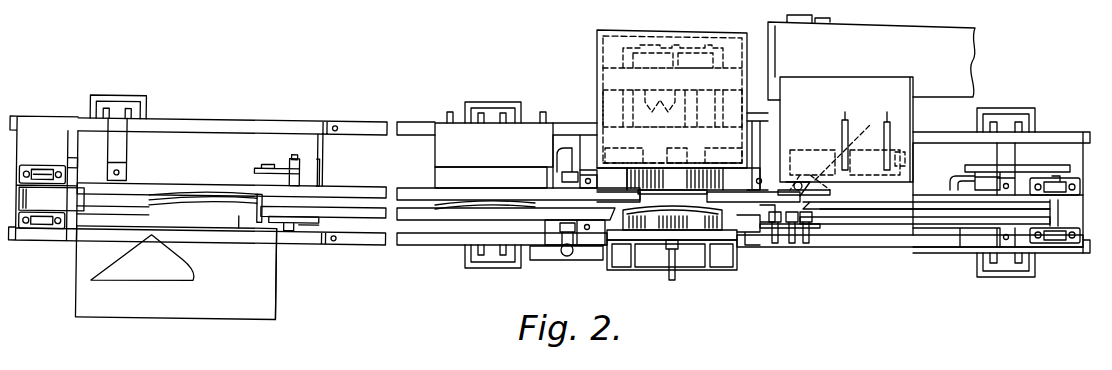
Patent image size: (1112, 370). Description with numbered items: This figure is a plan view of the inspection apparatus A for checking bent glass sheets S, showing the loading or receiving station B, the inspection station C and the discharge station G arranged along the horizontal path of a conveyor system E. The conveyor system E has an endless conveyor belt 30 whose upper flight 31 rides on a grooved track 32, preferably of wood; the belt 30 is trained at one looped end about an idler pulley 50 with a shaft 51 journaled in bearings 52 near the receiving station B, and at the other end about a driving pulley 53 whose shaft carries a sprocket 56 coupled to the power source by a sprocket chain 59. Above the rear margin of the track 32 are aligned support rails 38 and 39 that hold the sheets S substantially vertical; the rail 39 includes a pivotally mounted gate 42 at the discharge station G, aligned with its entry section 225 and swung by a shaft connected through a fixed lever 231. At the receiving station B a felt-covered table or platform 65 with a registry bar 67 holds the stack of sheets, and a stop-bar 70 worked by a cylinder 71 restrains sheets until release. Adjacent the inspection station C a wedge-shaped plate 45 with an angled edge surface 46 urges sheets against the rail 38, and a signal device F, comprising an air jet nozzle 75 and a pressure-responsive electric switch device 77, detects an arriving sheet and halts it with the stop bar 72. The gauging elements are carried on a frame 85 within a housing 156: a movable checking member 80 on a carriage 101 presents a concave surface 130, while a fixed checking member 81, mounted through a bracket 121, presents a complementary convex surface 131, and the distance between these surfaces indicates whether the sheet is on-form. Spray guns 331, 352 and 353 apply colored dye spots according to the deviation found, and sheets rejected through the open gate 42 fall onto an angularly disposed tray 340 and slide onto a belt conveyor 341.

The idler pulley 50 is at (33, 172).
The shaft 51 is at (41, 186).
The bearings 52 is at (70, 167).
The registry bar 67 is at (200, 215).
The felt-covered table or platform 65 is at (213, 294).
The stop-bar 70 is at (258, 196).
The cylinder 71 is at (282, 170).
The endless conveyor belt 30 is at (358, 196).
The grooved track 32 is at (357, 220).
The support rail 38 is at (377, 190).
The upper flight 31 is at (417, 205).
The angularly disposed edge surface 46 is at (547, 207).
The wedge-shaped plate 45 is at (537, 209).
The air jet nozzle 75 is at (574, 250).
The electric switch device 77 is at (560, 174).
The housing 156 is at (637, 42).
The carriage 101 is at (694, 46).
The frame 85 is at (733, 66).
The surface 130 is at (653, 189).
The movable checking member 80 is at (677, 190).
The surface 131 is at (652, 212).
The fixed checking member 81 is at (698, 216).
The bracket 121 is at (653, 267).
The stop member or bar 72 is at (719, 240).
The spray gun 352 is at (770, 255).
The spray gun 353 is at (797, 258).
The spray gun 331 is at (811, 240).
The gate 42 is at (860, 195).
The support rail 39 is at (930, 200).
The entry section 225 is at (781, 198).
The fixed lever 231 is at (820, 130).
The tray 340 is at (893, 117).
The belt conveyor 341 is at (915, 62).
The sprocket chain 59 is at (1037, 164).
The sprocket 56 is at (1054, 177).
The pulley 53 is at (1063, 243).
The inspection apparatus A is at (244, 117).
The loading or receiving station B is at (283, 277).
The inspection station C is at (594, 89).
The conveyor system E is at (339, 187).
The signal device F is at (566, 146).
The discharge station G is at (859, 258).
The bent glass sheets S is at (185, 195).